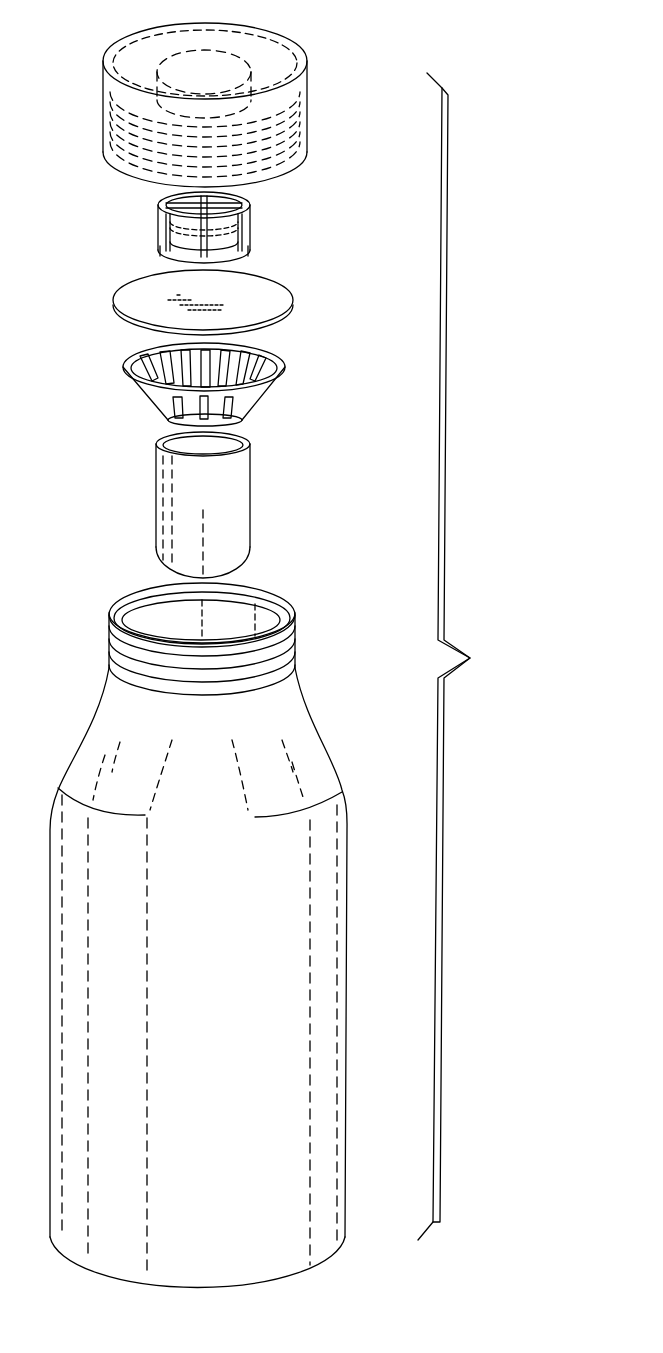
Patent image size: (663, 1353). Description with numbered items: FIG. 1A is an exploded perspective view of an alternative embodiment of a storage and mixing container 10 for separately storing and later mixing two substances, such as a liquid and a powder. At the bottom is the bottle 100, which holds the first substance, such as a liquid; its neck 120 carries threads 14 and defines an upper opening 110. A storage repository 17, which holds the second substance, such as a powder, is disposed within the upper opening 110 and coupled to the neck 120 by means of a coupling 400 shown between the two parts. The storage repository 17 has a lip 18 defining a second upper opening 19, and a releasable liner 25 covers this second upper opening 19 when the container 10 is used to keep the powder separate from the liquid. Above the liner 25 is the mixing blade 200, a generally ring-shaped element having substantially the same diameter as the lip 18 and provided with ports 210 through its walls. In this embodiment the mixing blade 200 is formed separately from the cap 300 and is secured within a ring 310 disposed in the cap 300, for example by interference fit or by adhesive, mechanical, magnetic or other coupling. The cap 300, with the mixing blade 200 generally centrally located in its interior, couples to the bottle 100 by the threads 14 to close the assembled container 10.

The storage and mixing container 10 is at (74, 546).
The cap 300 is at (309, 112).
The ring 310 is at (148, 72).
The mixing blade 200 is at (253, 215).
The ports 210 is at (165, 252).
The releasable liner 25 is at (282, 300).
The coupling 400 is at (280, 383).
The storage repository 17 is at (252, 526).
The lip 18 is at (250, 438).
The second upper opening 19 is at (182, 440).
The bottle 100 is at (305, 727).
The upper opening 110 is at (142, 613).
The neck 120 is at (280, 603).
The threads 14 is at (297, 652).